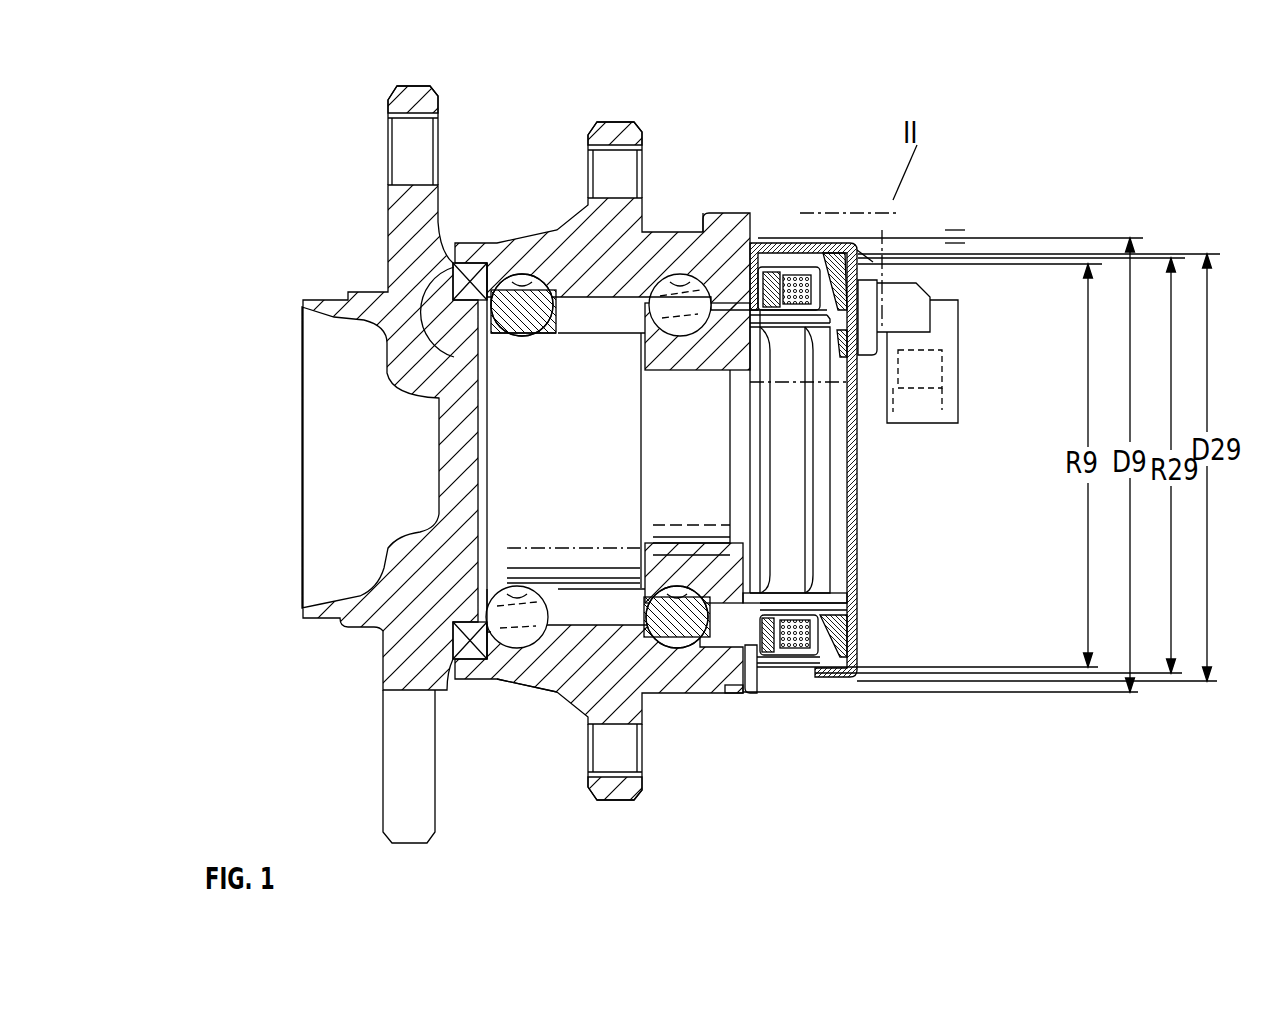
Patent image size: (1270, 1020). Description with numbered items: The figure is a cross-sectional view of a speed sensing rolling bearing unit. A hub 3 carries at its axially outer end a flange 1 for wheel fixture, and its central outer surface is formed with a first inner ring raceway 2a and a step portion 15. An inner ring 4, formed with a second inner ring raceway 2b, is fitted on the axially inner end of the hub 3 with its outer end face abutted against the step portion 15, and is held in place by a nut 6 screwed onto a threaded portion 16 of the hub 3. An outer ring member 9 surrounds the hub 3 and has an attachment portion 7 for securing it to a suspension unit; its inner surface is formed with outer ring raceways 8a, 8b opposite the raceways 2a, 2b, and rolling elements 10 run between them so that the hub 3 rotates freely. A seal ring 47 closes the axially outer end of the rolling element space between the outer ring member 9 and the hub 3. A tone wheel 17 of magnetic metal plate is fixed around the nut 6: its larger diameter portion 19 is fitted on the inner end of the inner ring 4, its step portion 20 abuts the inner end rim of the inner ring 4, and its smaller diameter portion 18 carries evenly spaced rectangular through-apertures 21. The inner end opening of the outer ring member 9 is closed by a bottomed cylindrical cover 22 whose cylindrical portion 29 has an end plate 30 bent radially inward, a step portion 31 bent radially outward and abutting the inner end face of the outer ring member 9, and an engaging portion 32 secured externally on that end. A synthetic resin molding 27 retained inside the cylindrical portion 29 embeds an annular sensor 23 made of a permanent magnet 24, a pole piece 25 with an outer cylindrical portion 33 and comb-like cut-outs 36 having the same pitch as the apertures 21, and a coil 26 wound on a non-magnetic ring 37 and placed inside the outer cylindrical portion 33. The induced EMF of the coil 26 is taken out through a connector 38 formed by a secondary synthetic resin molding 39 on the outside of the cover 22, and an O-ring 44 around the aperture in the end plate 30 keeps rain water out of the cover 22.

The flange 1 is at (397, 227).
The first inner ring raceway 2a is at (503, 640).
The second inner ring raceway 2b is at (700, 662).
The hub 3 is at (530, 413).
The inner ring 4 is at (747, 297).
The nut 6 is at (797, 570).
The attachment portion 7 is at (622, 132).
The outer ring raceway 8a is at (527, 282).
The outer ring raceway 8b is at (677, 283).
The outer ring member 9 is at (572, 248).
The rolling elements 10 is at (495, 330).
The step portion 15 is at (558, 683).
The threaded portion 16 is at (738, 470).
The tone wheel 17 is at (745, 670).
The smaller diameter portion 18 is at (785, 670).
The larger diameter portion 19 is at (737, 323).
The step portion 20 is at (757, 310).
The through-apertures 21 is at (873, 327).
The cover 22 is at (783, 268).
The sensor 23 is at (805, 668).
The permanent magnet 24 is at (800, 268).
The pole piece 25 is at (790, 673).
The coil 26 is at (855, 672).
The synthetic resin molding 27 is at (840, 647).
The cylindrical portion 29 is at (830, 297).
The end plate 30 is at (960, 243).
The step portion 31 is at (758, 663).
The engaging portion 32 is at (735, 688).
The outer cylindrical portion 33 is at (830, 268).
The cut-outs 36 is at (825, 608).
The ring 37 is at (965, 230).
The connector 38 is at (875, 290).
The synthetic resin molding 39 is at (930, 367).
The O-ring 44 is at (873, 297).
The seal ring 47 is at (450, 640).